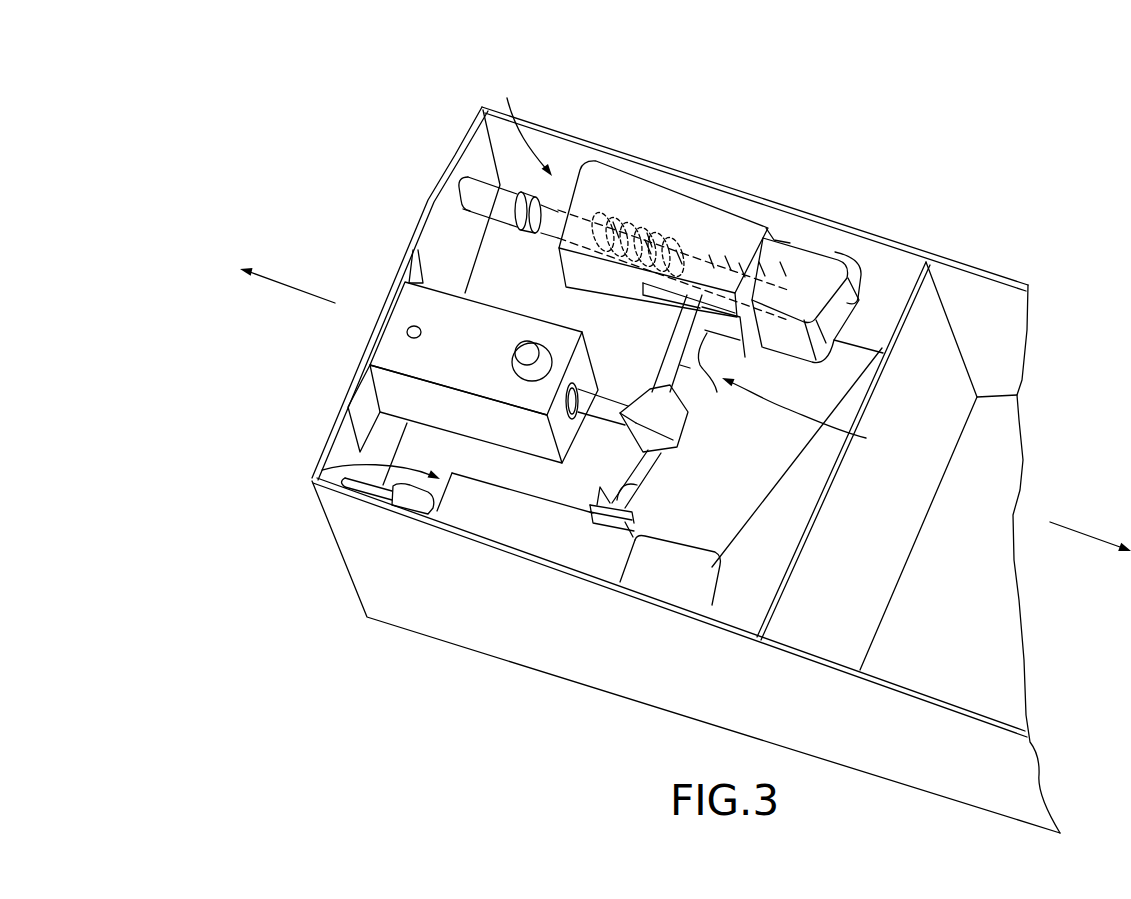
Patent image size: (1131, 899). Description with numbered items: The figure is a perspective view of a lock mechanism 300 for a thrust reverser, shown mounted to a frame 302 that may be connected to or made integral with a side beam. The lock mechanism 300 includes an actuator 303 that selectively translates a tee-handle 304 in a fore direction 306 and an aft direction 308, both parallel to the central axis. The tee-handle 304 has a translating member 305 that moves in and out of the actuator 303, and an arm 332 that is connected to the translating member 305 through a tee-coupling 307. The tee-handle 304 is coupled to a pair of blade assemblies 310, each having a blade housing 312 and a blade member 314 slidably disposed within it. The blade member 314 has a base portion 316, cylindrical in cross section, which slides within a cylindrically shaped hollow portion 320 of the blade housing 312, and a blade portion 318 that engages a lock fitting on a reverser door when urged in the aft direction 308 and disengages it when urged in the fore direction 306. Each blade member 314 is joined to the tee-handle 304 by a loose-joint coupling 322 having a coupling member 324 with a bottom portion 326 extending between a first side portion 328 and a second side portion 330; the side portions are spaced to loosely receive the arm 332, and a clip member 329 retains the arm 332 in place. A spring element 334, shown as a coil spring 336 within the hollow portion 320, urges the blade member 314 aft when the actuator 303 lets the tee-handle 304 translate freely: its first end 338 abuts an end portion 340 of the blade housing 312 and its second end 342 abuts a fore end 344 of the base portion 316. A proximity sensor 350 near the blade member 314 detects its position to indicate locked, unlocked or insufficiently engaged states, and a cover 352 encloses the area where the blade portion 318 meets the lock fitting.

The lock mechanism 300 is at (264, 117).
The frame 302 is at (985, 265).
The actuator 303 is at (382, 343).
The tee-handle 304 is at (662, 430).
The translating member 305 is at (598, 418).
The fore direction 306 is at (281, 279).
The tee-coupling 307 is at (673, 420).
The aft direction 308 is at (1083, 538).
The blade assembly 310 is at (405, 271).
The blade housing 312 is at (458, 504).
The blade member 314 is at (763, 268).
The base portion 316 is at (742, 270).
The blade portion 318 is at (785, 265).
The cylindrically shaped hollow portion 320 is at (688, 262).
The loose-joint coupling 322 is at (813, 421).
The coupling member 324 is at (710, 333).
The bottom portion 326 is at (686, 370).
The first side portion 328 is at (675, 327).
The clip member 329 is at (637, 490).
The second side portion 330 is at (706, 362).
The arm 332 is at (683, 343).
The spring element 334 is at (648, 247).
The coil spring 336 is at (650, 240).
The first end 338 is at (619, 233).
The end portion 340 is at (560, 242).
The second end 342 is at (712, 260).
The fore end 344 is at (728, 262).
The proximity sensor 350 is at (553, 217).
The cover 352 is at (816, 270).